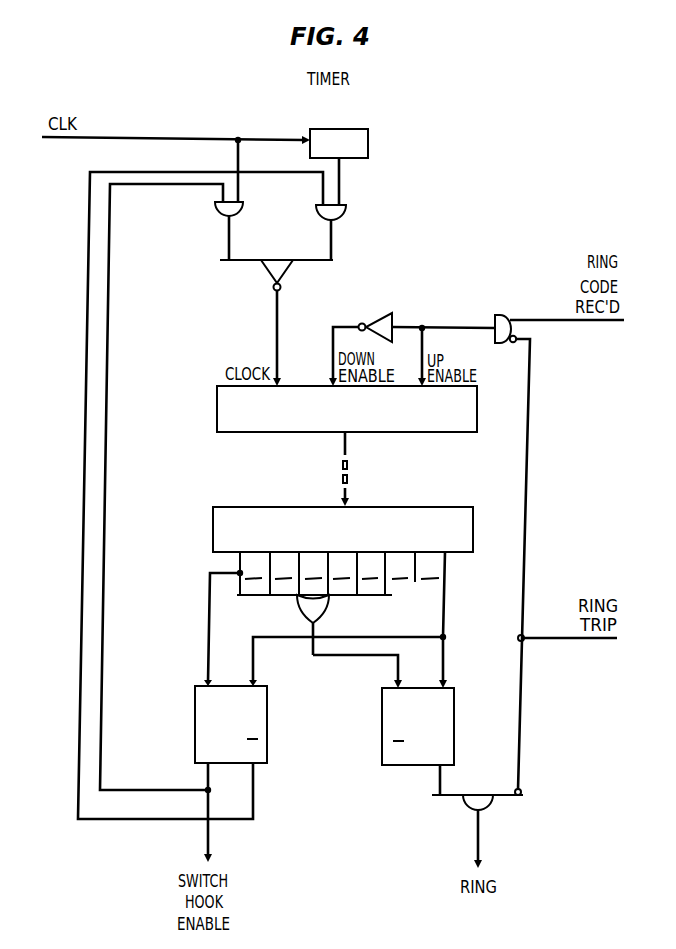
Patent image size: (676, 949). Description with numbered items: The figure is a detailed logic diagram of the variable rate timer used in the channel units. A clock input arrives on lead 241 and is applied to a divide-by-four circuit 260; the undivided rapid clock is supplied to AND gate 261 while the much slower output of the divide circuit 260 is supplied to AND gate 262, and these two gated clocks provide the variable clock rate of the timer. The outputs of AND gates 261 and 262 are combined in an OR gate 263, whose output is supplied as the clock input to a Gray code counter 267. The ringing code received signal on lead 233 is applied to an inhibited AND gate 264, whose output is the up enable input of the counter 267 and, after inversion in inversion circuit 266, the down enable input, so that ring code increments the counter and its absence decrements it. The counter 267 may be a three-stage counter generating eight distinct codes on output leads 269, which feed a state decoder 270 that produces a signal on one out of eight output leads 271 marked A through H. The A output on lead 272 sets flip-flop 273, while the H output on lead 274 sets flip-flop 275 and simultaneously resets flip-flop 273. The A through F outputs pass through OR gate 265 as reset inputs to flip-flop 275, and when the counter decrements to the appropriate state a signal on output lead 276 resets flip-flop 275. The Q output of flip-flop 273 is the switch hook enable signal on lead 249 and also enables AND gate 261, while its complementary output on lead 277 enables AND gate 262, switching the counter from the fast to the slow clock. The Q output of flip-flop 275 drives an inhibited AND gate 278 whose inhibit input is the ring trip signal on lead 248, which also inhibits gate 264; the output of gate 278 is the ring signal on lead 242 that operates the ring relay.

The clock signal lead 241 is at (192, 137).
The divide-by-four circuit 260 is at (368, 143).
The AND gate 261 is at (215, 211).
The AND gate 262 is at (345, 213).
The OR gate 263 is at (266, 275).
The inhibited AND gate 264 is at (497, 315).
The OR gate 265 is at (330, 598).
The inversion circuit 266 is at (392, 313).
The Gray code counter 267 is at (217, 405).
The output leads 269 is at (352, 483).
The state decoder 270 is at (213, 528).
The output leads 271 is at (262, 583).
The lead 272 is at (210, 612).
The flip-flop 273 is at (195, 735).
The lead 274 is at (445, 615).
The flip-flop 275 is at (382, 732).
The output lead 276 is at (345, 658).
The lead 277 is at (78, 735).
The inhibited AND gate 278 is at (489, 806).
The lead 233 is at (575, 321).
The lead 248 is at (560, 640).
The lead 249 is at (206, 827).
The lead 242 is at (478, 827).